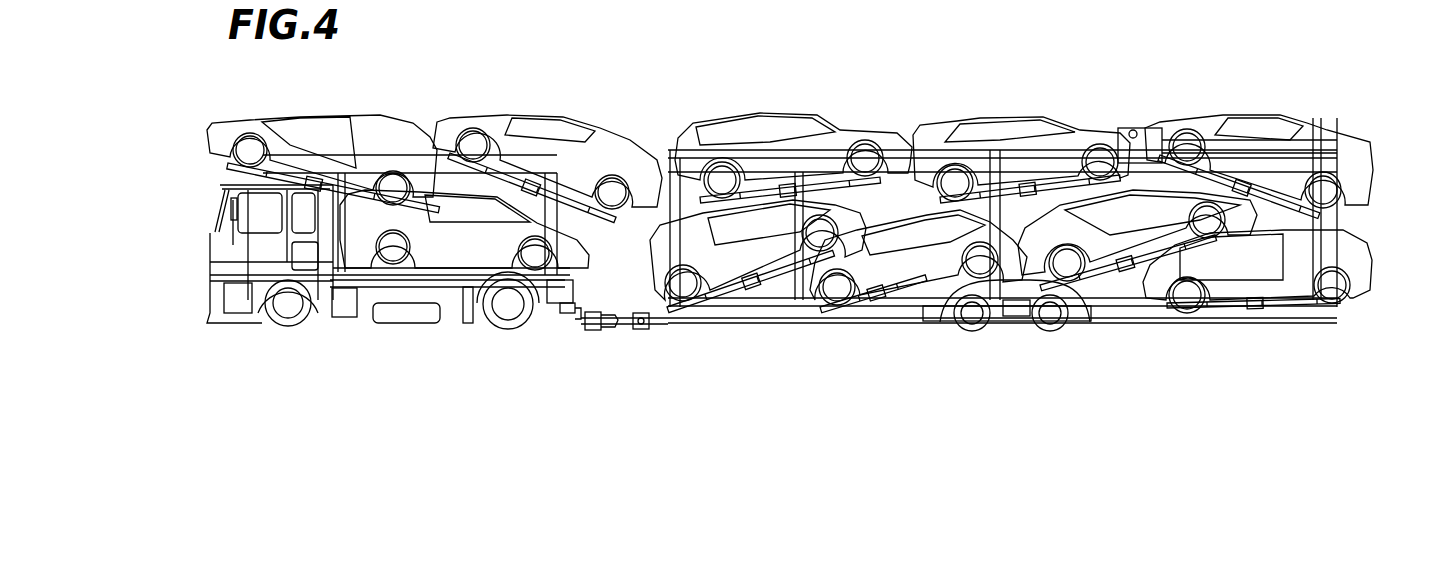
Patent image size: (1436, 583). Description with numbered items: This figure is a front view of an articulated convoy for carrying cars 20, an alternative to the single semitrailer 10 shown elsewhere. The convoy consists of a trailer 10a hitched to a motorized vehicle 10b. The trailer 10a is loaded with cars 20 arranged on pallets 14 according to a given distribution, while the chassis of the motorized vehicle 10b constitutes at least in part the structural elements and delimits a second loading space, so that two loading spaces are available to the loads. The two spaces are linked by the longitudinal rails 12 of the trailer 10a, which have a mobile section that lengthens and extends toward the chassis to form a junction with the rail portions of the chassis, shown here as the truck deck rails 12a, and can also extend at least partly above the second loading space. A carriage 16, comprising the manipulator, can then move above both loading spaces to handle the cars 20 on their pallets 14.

The semitrailer 10 is at (811, 205).
The trailer 10a is at (867, 332).
The motorized vehicle 10b is at (395, 336).
The longitudinal rails 12 is at (977, 152).
The truck loading deck 12a is at (363, 185).
The pallets 14 is at (343, 198).
The carriage 16 is at (1134, 115).
The cars 20 is at (962, 123).